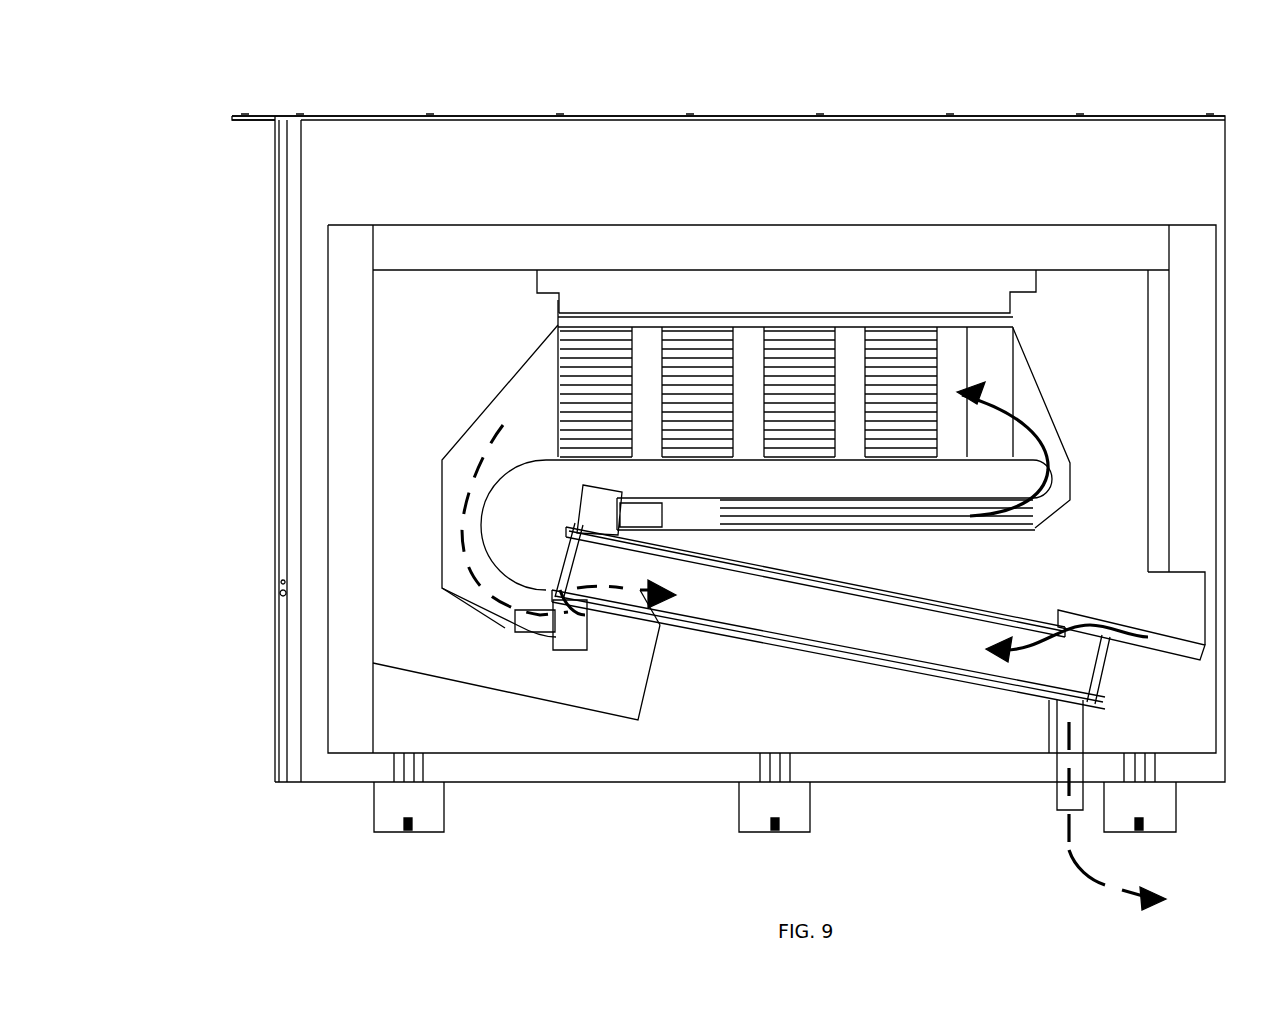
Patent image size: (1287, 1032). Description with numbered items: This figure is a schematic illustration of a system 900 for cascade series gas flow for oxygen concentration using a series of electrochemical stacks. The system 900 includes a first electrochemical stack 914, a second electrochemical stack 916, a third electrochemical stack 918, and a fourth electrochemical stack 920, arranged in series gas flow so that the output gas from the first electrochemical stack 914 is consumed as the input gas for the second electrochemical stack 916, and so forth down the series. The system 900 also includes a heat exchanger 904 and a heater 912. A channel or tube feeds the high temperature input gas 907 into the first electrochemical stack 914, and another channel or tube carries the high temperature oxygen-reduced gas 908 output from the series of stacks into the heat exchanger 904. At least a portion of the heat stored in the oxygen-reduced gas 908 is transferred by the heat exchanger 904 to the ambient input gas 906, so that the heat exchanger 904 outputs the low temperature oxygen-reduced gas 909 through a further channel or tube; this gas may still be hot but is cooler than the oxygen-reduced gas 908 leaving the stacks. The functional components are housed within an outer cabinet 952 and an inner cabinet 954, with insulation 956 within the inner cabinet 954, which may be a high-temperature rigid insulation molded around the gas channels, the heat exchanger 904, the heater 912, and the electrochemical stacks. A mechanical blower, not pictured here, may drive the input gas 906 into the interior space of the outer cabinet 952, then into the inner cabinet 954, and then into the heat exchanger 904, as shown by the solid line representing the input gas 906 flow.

The system 900 is at (347, 60).
The outer cabinet 952 is at (776, 116).
The inner cabinet 954 is at (611, 240).
The insulation 956 is at (394, 614).
The oxygen-reduced gas 908 is at (540, 409).
The fourth electrochemical stack 920 is at (593, 420).
The third electrochemical stack 918 is at (708, 420).
The second electrochemical stack 916 is at (806, 420).
The first electrochemical stack 914 is at (917, 420).
The high temperature input gas 907 is at (1036, 505).
The heater 912 is at (940, 522).
The heat exchanger 904 is at (805, 626).
The input gas 906 is at (1128, 638).
The low temperature oxygen-reduced gas 909 is at (1068, 845).